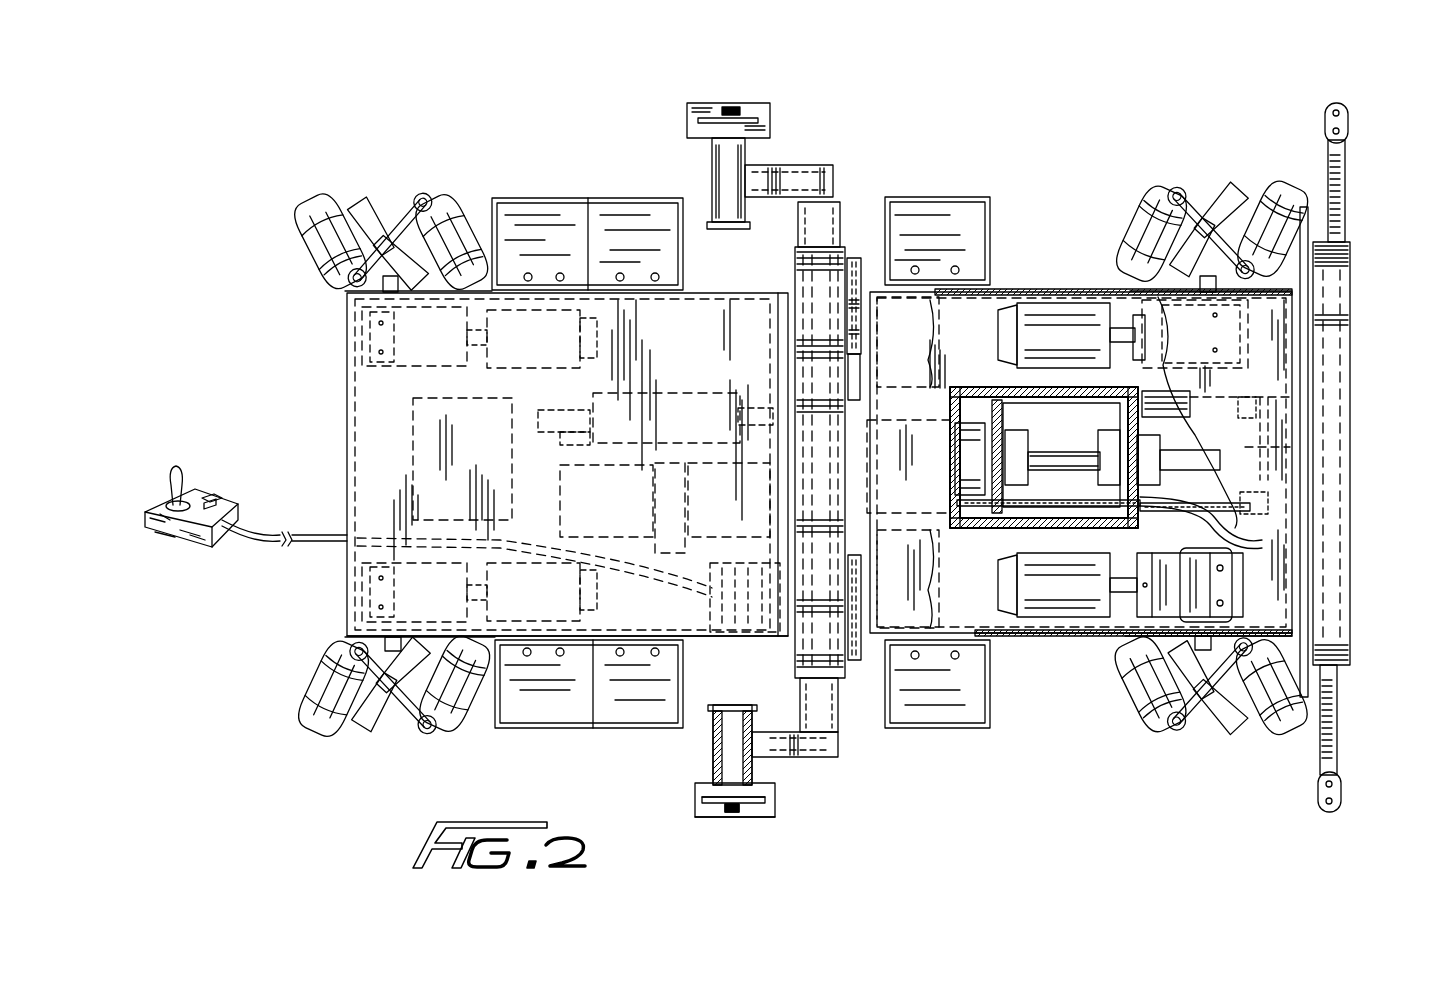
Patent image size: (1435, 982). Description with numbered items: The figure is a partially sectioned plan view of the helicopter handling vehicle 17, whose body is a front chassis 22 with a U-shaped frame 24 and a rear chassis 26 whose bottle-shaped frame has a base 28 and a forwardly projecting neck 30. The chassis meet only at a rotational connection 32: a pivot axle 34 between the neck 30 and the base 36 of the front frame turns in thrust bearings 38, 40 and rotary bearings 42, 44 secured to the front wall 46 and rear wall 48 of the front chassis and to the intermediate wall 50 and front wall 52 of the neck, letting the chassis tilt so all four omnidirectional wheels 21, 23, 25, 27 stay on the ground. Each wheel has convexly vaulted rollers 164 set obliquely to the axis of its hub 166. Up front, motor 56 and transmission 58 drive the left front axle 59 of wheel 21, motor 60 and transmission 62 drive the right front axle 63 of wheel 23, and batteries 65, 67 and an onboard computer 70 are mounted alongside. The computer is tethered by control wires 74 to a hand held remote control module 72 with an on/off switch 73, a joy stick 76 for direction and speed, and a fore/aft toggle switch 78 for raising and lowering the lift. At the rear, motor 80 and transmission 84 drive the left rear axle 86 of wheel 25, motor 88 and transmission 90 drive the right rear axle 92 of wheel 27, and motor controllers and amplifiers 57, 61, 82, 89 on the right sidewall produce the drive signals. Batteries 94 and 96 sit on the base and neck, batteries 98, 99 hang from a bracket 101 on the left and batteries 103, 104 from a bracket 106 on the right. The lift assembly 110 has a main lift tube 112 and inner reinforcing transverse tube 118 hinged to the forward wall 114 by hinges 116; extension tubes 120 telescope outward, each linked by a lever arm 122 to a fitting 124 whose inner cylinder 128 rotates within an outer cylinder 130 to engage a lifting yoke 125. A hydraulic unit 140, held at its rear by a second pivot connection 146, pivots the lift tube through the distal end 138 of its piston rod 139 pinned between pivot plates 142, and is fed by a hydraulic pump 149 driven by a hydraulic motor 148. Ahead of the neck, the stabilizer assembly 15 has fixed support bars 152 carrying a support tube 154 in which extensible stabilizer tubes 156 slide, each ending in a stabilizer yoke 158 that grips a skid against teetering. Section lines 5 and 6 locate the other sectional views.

The section line 5- 5 is at (1286, 190).
The section line 6- 6 is at (860, 456).
The drive unit 15 is at (1356, 602).
The helicopter handling vehicle 17 is at (310, 735).
The omnidirectional wheel 21 is at (1165, 185).
The front chassis 22 is at (1097, 724).
The omnidirectional wheel 23 is at (1205, 735).
The frame 24 is at (1032, 640).
The omnidirectional wheel 25 is at (386, 195).
The rear chassis 26 is at (342, 350).
The omnidirectional wheel 27 is at (410, 758).
The base 28 is at (345, 382).
The neck 30 is at (1030, 593).
The rotational connection 32 is at (1172, 446).
The pivot axle 34 is at (1062, 452).
The base of the U-shaped front frame 36 is at (880, 300).
The thrust bearing 38 is at (1298, 412).
The thrust bearing 40 is at (1105, 582).
The rotary bearing 42 is at (1160, 478).
The rotary bearing 44 is at (1085, 480).
The front wall 46 is at (1298, 470).
The rear wall 48 is at (1150, 395).
The intermediate wall 50 is at (960, 555).
The front wall 52 is at (1060, 387).
The electric motor 56 is at (1020, 305).
The motor controller and amplifier 57 is at (718, 645).
The transmission 58 is at (1138, 318).
The left front axle 59 is at (1213, 282).
The electric motor 60 is at (1040, 618).
The motor controller and amplifier 61 is at (740, 645).
The transmission 62 is at (1085, 625).
The right front axle 63 is at (1180, 718).
The 12 volt battery 65 is at (945, 220).
The 12 volt battery 67 is at (960, 700).
The onboard computer 70 is at (1210, 522).
The hand held remote control module 72 is at (185, 555).
The on/off switch 73 is at (232, 540).
The tether 74 is at (325, 545).
The joy stick 76 is at (178, 465).
The fore/aft toggle switch 78 is at (210, 493).
The electric motor 80 is at (597, 312).
The motor controller and amplifier 82 is at (760, 645).
The transmission 84 is at (400, 375).
The left rear axle 86 is at (312, 280).
The electric motor 88 is at (600, 595).
The motor controller and amplifier 89 is at (778, 640).
The transmission 90 is at (355, 612).
The right rear axle 92 is at (330, 660).
The battery 94 is at (347, 510).
The battery 96 is at (947, 390).
The battery 98 is at (512, 215).
The battery 99 is at (632, 210).
The bracket 101 is at (578, 195).
The battery 103 is at (585, 700).
The battery 104 is at (665, 700).
The bracket 106 is at (500, 730).
The lift assembly 110 is at (800, 110).
The main lift tube 112 is at (795, 268).
The forward wall 114 is at (853, 262).
The hinges 116 is at (862, 662).
The inner reinforcing transverse tube 118 is at (840, 208).
The extension tube 120 is at (833, 175).
The lever arm 122 is at (790, 165).
The fitting 124 is at (700, 100).
The lifting yoke 125 is at (760, 830).
The metal cylinder 128 is at (700, 790).
The outer metal cylinder 130 is at (775, 800).
The distal end of the piston rod 138 is at (897, 378).
The piston rod 139 is at (775, 408).
The hydraulic unit 140 is at (655, 390).
The pivot plates 142 is at (875, 408).
The second pivot connection 146 is at (590, 395).
The hydraulic motor 148 is at (575, 495).
The hydraulic pump 149 is at (720, 485).
The support bars 152 is at (1305, 395).
The support tube 154 is at (1348, 272).
The stabilizer tubes 156 is at (1343, 220).
The stabilizer yoke 158 is at (1352, 128).
The rollers 164 is at (453, 740).
The hub 166 is at (385, 740).